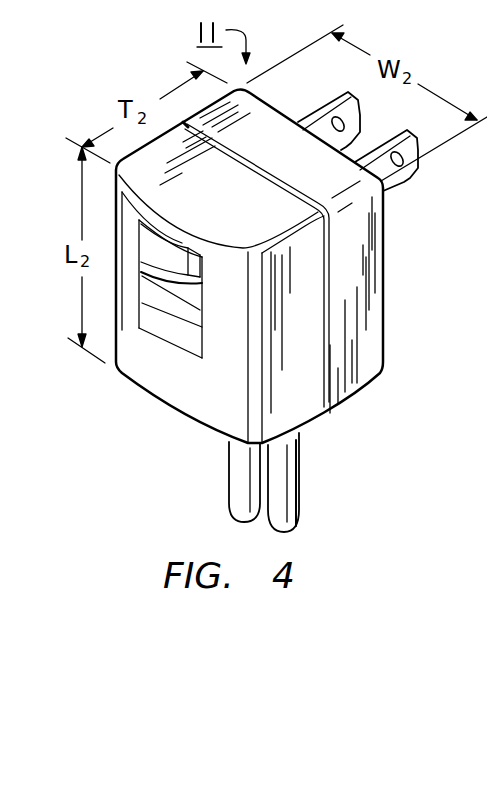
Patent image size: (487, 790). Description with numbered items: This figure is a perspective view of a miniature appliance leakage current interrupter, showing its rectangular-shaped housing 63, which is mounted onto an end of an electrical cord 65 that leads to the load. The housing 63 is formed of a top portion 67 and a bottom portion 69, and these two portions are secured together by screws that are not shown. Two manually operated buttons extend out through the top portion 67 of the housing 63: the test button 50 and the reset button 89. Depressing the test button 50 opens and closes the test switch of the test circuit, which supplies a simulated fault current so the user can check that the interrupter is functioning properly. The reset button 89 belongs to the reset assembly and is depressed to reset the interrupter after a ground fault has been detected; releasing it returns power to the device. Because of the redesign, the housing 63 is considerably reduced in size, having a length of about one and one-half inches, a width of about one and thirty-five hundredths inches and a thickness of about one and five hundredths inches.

The housing 63 is at (392, 289).
The top portion 67 is at (212, 412).
The bottom portion 69 is at (365, 233).
The reset button 89 is at (168, 266).
The test button 50 is at (168, 310).
The electrical cord 65 is at (284, 469).